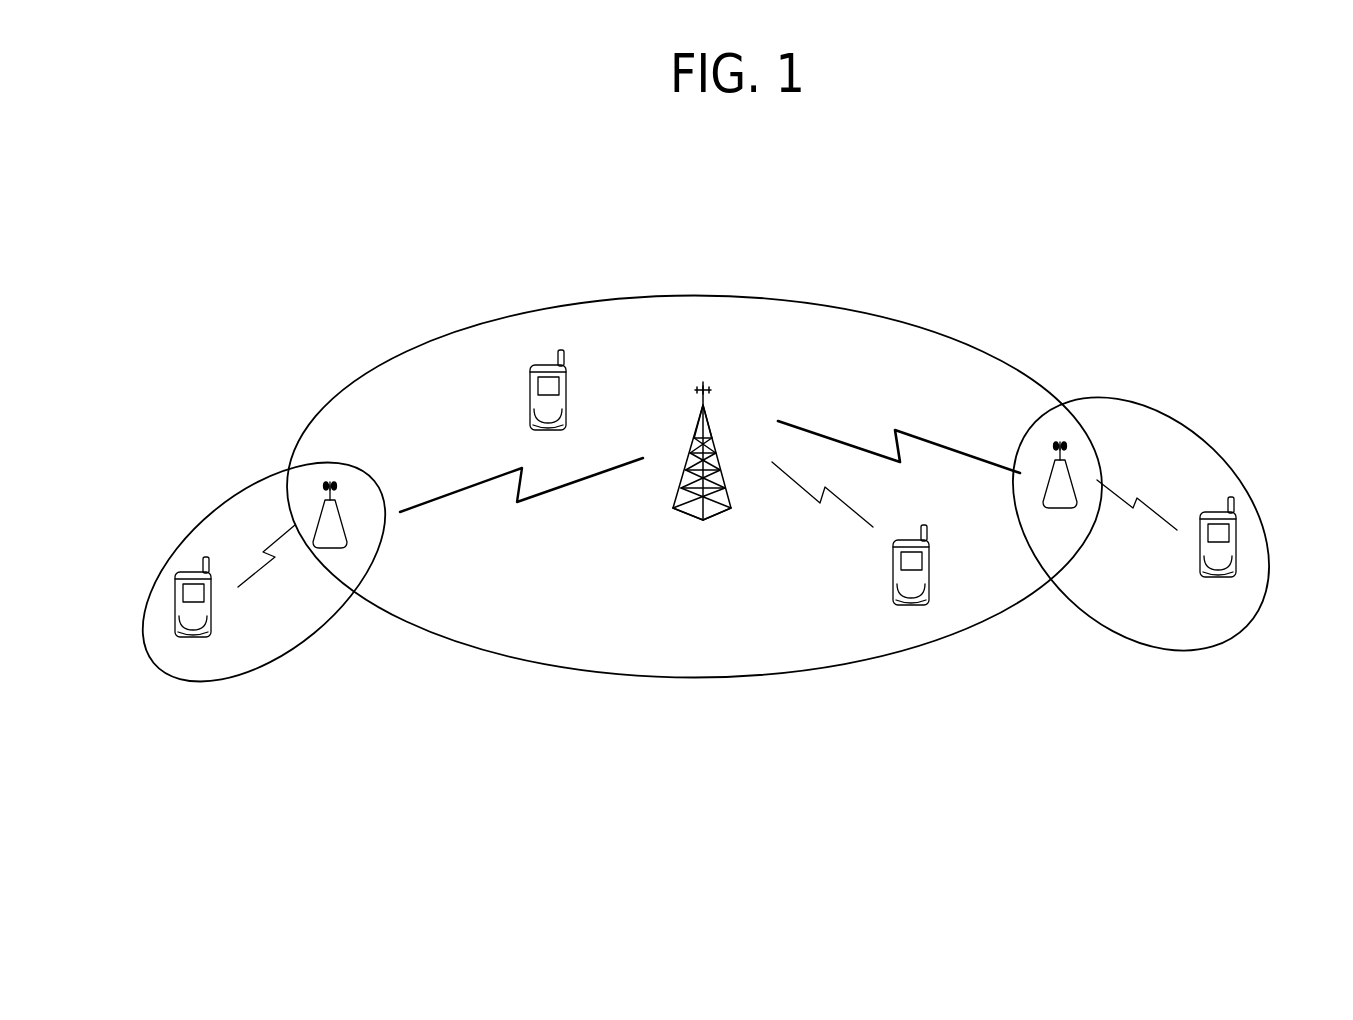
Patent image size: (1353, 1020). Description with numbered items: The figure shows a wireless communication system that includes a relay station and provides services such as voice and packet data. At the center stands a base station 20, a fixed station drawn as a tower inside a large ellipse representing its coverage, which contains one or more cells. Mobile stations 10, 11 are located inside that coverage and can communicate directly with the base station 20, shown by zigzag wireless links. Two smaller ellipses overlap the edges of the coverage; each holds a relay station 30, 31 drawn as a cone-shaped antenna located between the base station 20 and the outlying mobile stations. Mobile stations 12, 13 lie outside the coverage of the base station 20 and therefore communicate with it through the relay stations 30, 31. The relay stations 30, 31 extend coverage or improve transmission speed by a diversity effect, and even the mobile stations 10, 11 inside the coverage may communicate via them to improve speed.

The mobile station 10 is at (530, 397).
The mobile station 11 is at (930, 560).
The mobile station 12 is at (212, 607).
The mobile station 13 is at (1200, 550).
The base station 20 is at (708, 418).
The relay station 30 is at (338, 510).
The relay station 31 is at (1067, 462).